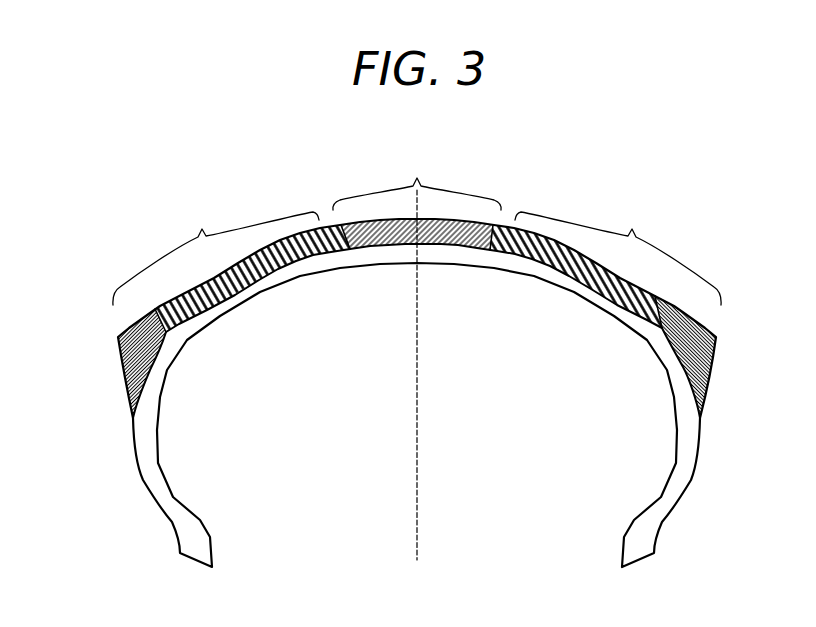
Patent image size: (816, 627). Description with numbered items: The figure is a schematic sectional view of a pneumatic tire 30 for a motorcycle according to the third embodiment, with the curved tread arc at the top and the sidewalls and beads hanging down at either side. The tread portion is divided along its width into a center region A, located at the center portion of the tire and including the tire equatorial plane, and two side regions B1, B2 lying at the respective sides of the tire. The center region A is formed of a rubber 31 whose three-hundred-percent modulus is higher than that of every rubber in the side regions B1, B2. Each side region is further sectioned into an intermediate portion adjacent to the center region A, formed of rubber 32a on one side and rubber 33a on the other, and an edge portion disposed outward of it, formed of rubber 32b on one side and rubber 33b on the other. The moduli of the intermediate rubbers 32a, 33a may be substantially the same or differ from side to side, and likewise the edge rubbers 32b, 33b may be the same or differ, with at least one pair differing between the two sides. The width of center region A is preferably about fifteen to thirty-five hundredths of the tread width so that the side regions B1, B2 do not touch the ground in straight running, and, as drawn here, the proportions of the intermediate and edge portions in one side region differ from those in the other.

The pneumatic tire 30 is at (116, 234).
The rubber constituting the center region 31 is at (467, 221).
The rubber at intermediate portion 32a is at (262, 249).
The rubber at edge portion 32b is at (138, 312).
The rubber at intermediate portion 33a is at (623, 277).
The rubber at edge portion 33b is at (687, 320).
The center region A is at (417, 181).
The side region B1 is at (216, 253).
The side region B2 is at (618, 255).